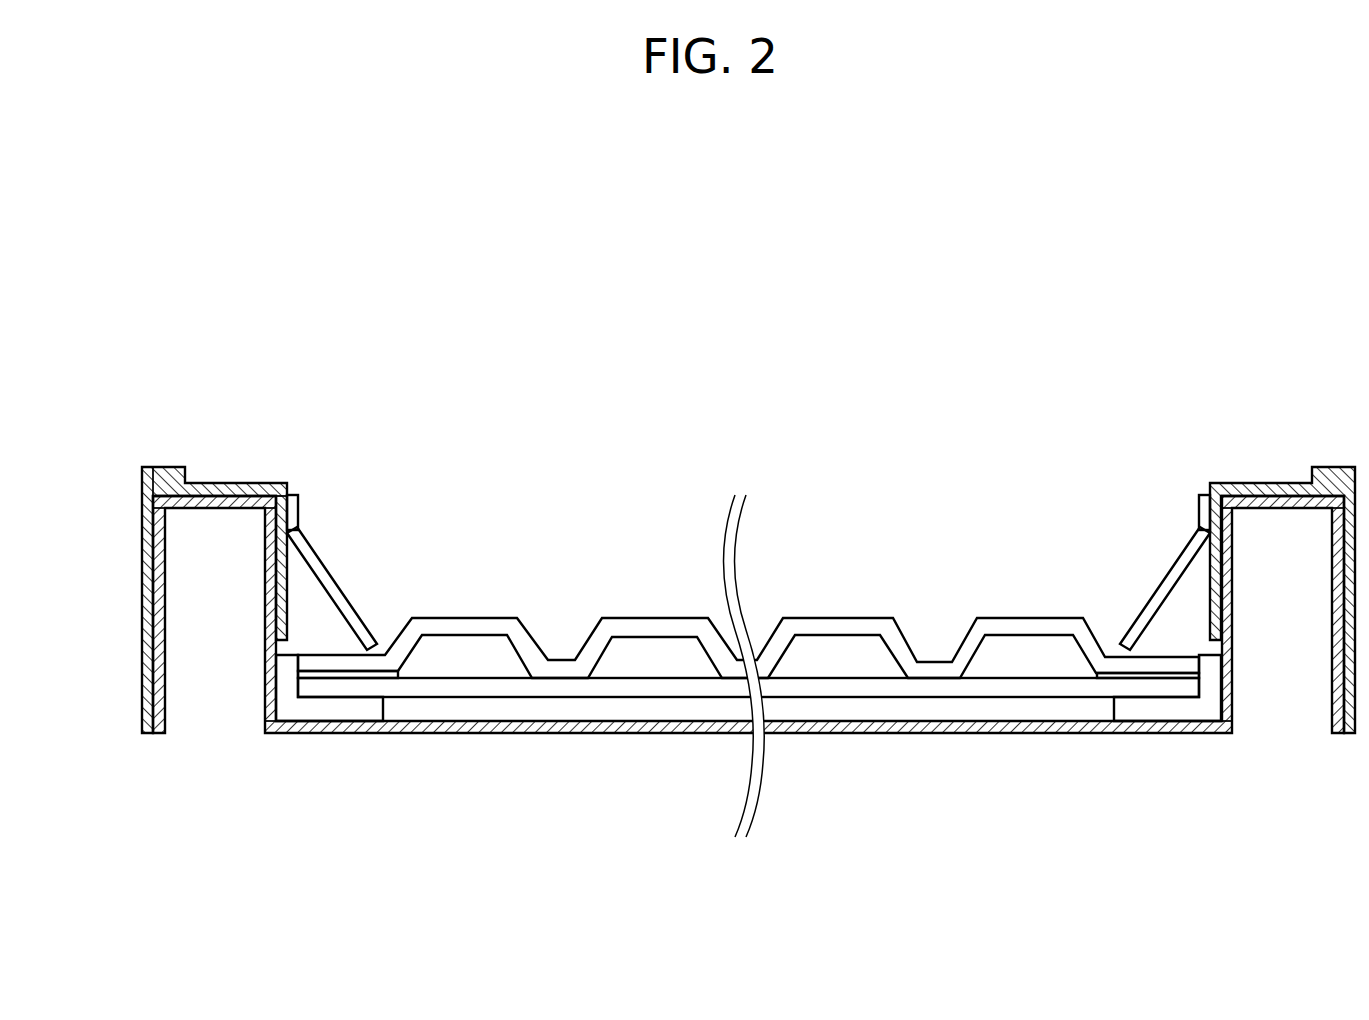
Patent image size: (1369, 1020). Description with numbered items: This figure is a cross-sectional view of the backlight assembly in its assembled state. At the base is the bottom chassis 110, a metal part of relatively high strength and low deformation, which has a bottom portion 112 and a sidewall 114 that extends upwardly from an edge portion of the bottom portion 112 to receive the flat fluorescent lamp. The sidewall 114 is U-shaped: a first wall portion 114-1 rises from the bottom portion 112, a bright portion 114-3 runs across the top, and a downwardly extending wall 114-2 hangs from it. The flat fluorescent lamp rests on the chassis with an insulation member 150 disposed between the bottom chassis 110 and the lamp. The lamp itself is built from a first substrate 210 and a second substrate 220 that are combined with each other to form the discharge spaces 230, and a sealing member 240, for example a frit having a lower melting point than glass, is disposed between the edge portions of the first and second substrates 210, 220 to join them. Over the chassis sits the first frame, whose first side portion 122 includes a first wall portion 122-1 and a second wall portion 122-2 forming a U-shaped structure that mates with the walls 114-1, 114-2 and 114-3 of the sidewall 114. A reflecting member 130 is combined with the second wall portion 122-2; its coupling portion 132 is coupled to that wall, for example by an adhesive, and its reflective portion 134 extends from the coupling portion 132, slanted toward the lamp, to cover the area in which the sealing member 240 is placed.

The bottom chassis 110 is at (748, 662).
The bottom portion 112 is at (603, 733).
The sidewall 114 is at (748, 650).
The first wall portion 114-1 is at (270, 688).
The downwardly extending wall 114-2 is at (160, 633).
The bright portion 114-3 is at (213, 508).
The first side portion 122 is at (687, 600).
The first wall portion 122-1 is at (140, 593).
The second wall portion 122-2 is at (287, 593).
The reflecting member 130 is at (748, 572).
The coupling portion 132 is at (297, 512).
The reflective portion 134 is at (313, 557).
The insulation member 150 is at (293, 710).
The first substrate 210 is at (689, 690).
The second substrate 220 is at (613, 620).
The discharge spaces 230 is at (489, 662).
The sealing member 240 is at (352, 678).